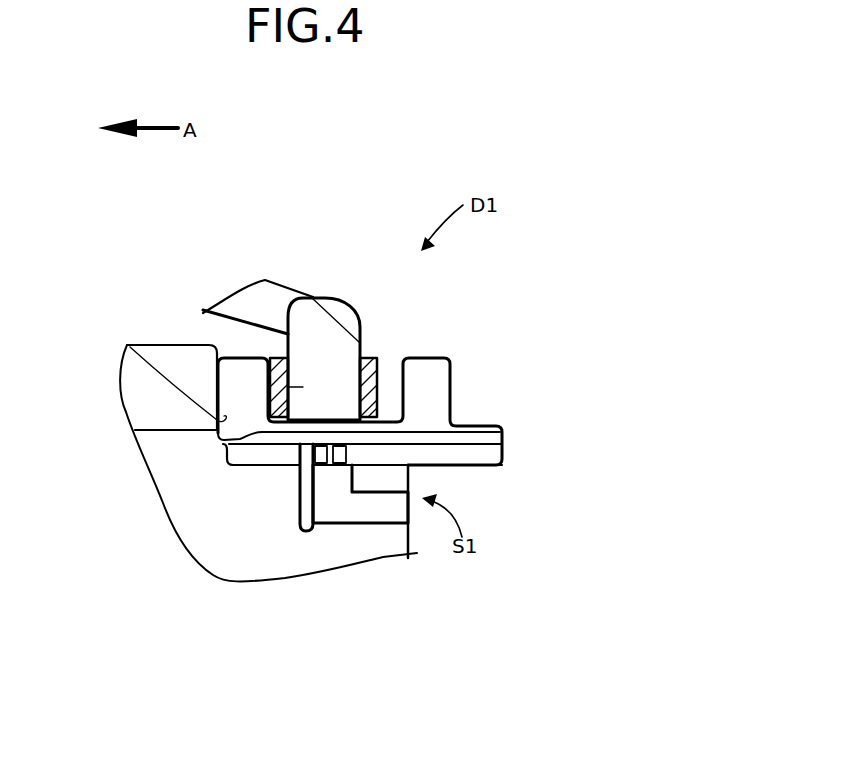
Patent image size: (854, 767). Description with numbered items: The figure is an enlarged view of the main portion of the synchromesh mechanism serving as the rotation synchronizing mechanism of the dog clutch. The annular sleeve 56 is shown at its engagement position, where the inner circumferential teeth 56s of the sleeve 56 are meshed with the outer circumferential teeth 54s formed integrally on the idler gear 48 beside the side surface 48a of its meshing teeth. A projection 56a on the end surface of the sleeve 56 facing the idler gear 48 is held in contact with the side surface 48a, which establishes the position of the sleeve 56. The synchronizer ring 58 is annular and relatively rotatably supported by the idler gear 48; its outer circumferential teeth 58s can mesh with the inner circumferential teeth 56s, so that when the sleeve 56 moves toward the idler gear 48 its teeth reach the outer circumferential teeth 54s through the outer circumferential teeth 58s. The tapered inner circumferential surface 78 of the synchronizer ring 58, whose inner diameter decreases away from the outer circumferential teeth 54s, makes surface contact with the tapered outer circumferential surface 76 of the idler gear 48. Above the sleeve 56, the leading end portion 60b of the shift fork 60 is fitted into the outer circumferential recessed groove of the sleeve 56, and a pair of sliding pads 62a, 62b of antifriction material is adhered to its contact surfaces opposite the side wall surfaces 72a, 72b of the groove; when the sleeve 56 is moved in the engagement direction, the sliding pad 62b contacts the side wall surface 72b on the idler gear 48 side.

The idler gear 48 is at (192, 540).
The side surface of meshing teeth of idler gear 48a is at (127, 343).
The outer circumferential teeth 54s is at (270, 440).
The sleeve 56 is at (440, 380).
The projection 56a is at (227, 377).
The inner circumferential teeth 56s is at (473, 457).
The synchronizer ring 58 is at (350, 510).
The outer circumferential teeth of synchronizer ring 58s is at (343, 462).
The shift fork 60 is at (318, 268).
The leading end portion 60b is at (350, 417).
The sliding pad 62a is at (368, 358).
The sliding pad 62b is at (272, 400).
The side wall surface 72a is at (392, 385).
The side wall surface 72b is at (283, 403).
The tapered outer circumferential surface 76 is at (365, 525).
The tapered inner circumferential surface 78 is at (330, 527).